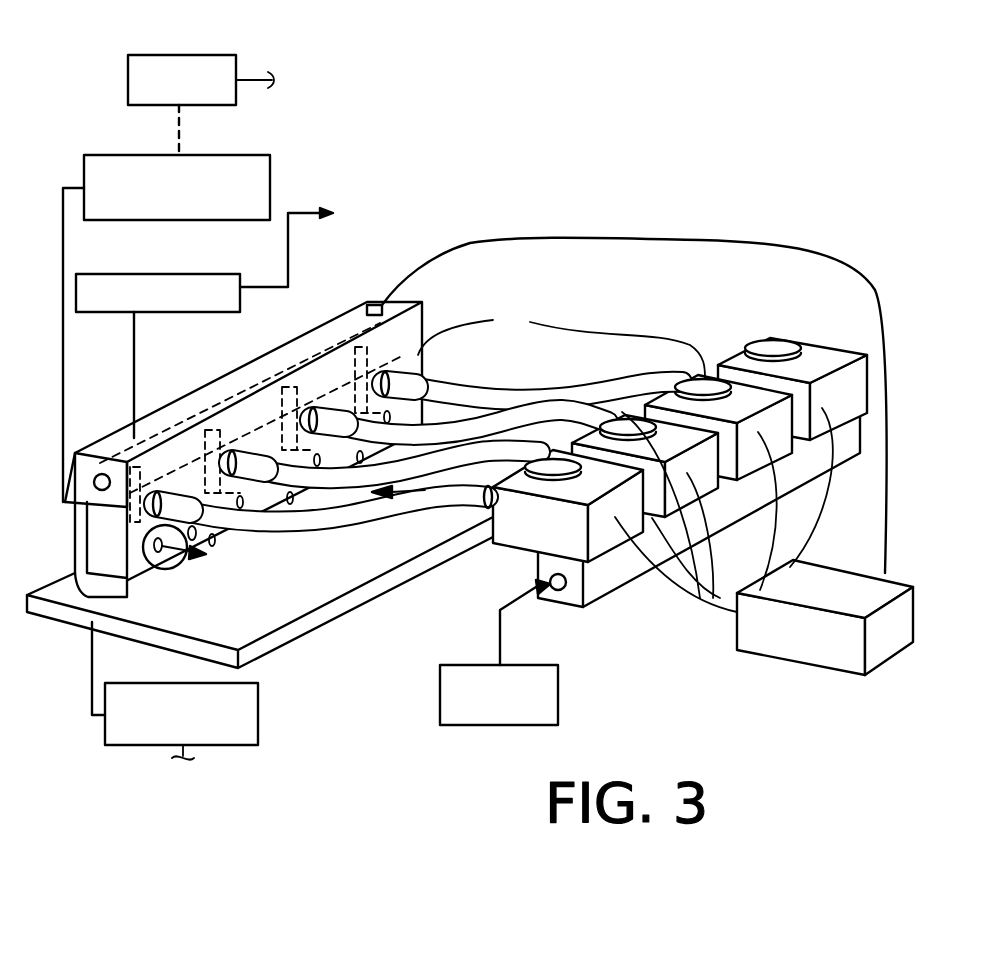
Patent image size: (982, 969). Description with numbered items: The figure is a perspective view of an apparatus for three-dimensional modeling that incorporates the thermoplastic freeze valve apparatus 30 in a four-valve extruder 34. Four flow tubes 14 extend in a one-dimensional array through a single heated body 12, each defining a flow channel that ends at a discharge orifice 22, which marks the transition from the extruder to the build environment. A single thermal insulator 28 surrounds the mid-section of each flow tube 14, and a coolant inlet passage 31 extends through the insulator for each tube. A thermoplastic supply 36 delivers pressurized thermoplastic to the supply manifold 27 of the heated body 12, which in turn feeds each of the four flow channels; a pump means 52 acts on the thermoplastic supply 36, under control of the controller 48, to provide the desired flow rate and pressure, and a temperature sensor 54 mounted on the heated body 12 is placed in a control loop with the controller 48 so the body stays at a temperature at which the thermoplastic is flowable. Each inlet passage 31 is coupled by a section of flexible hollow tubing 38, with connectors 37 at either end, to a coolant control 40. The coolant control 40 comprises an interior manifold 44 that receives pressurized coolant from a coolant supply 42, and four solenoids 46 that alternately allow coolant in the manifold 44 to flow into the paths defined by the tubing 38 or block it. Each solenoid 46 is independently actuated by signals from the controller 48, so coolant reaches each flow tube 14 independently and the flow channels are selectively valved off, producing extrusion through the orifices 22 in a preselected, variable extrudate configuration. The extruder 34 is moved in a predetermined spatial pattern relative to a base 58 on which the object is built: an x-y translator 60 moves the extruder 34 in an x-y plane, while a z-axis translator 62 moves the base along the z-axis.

The heated body 12 is at (110, 438).
The flow tubes 14 is at (205, 430).
The discharge orifices 22 is at (140, 584).
The supply manifold 27 is at (90, 476).
The thermal insulator 28 is at (418, 362).
The thermoplastic freeze valve apparatus 30 is at (178, 562).
The coolant inlet passage 31 is at (212, 552).
The four-valve extruder 34 is at (412, 292).
The thermoplastic supply 36 is at (270, 168).
The connectors 37 is at (561, 344).
The flexible hollow tubing 38 is at (577, 410).
The coolant control 40 is at (608, 565).
The coolant supply 42 is at (478, 665).
The interior manifold 44 is at (562, 592).
The solenoids 46 is at (767, 347).
The controller 48 is at (758, 648).
The pump means 52 is at (146, 55).
The temperature sensor 54 is at (368, 305).
The base 58 is at (296, 628).
The x-y translator 60 is at (198, 274).
The z-axis translator 62 is at (258, 702).